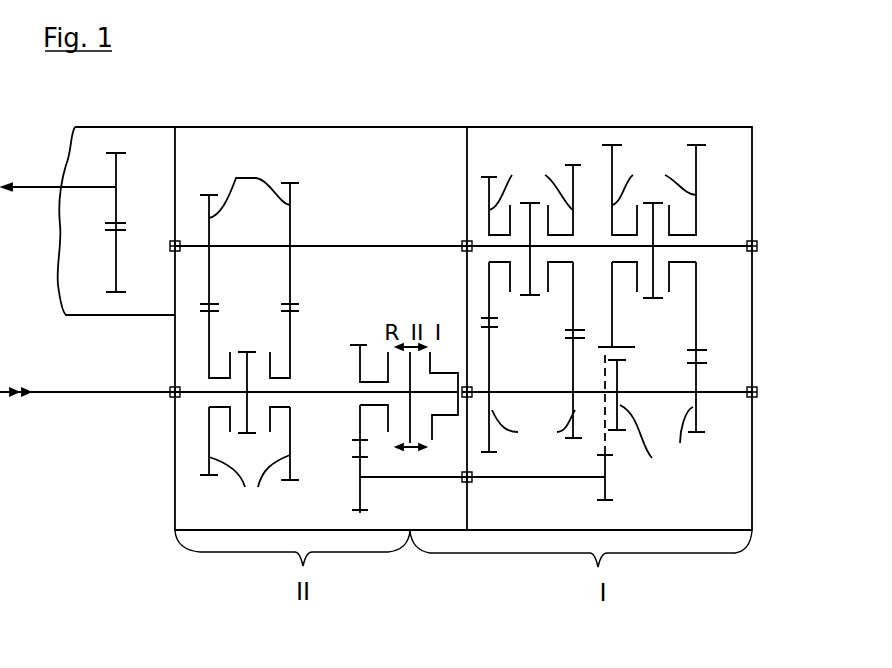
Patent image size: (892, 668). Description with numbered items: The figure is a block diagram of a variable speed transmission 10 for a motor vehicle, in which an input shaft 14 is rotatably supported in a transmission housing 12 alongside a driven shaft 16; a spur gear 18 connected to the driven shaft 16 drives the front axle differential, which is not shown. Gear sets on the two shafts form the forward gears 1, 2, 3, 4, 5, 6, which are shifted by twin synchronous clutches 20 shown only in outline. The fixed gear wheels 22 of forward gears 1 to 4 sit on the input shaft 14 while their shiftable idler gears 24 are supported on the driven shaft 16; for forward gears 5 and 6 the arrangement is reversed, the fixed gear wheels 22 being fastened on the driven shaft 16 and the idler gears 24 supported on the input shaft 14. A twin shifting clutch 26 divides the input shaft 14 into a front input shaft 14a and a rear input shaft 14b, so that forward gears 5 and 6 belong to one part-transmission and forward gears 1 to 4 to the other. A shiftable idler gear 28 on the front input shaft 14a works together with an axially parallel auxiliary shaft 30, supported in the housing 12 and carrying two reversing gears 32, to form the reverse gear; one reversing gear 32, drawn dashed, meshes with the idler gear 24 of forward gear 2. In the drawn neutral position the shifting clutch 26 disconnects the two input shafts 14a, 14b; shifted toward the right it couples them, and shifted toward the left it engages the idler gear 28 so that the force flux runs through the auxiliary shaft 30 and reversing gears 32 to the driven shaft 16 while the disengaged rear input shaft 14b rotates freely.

The forward gear 1 is at (700, 134).
The forward gear 2 is at (612, 135).
The forward gear 3 is at (573, 164).
The forward gear 4 is at (490, 167).
The forward gear 5 is at (289, 174).
The forward gear 6 is at (209, 185).
The variable speed transmission 10 is at (545, 105).
The transmission housing 12 is at (560, 532).
The input shaft 14 is at (137, 403).
The front input shaft 14a is at (347, 391).
The rear input shaft 14b is at (675, 390).
The driven shaft 16 is at (375, 245).
The spur gear 18 is at (92, 222).
The twin synchronous clutch 20 is at (248, 345).
The fixed gear wheel 22 is at (451, 310).
The idler gear 24 is at (452, 330).
The twin shifting clutch 26 is at (410, 456).
The shiftable idler gear 28 is at (362, 343).
The auxiliary shaft 30 is at (457, 479).
The reversing gear 32 is at (360, 512).